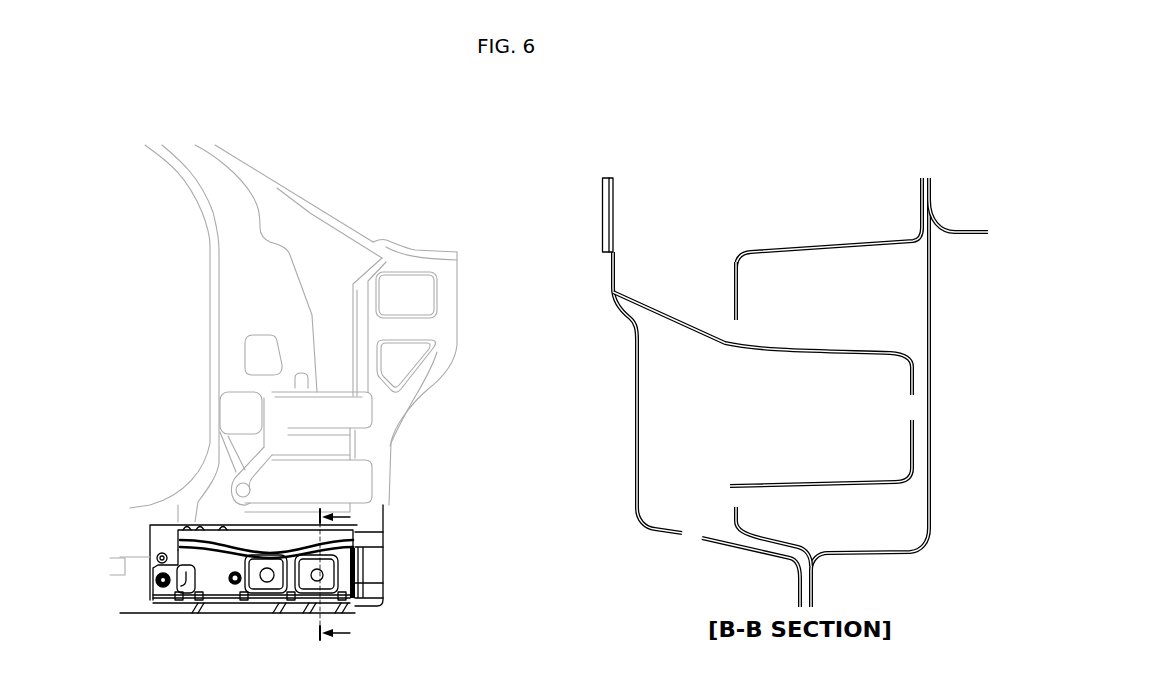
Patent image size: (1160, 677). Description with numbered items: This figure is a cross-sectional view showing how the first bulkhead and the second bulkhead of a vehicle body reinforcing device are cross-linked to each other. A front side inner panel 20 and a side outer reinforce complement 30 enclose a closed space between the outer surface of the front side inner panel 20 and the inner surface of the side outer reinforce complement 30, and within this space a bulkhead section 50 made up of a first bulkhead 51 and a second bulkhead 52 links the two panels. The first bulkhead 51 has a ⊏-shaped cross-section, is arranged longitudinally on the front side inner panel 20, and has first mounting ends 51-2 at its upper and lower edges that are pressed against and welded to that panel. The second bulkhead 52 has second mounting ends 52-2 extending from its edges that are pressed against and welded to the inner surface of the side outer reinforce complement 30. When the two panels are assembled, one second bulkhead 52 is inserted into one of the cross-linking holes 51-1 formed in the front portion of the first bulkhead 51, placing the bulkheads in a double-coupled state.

The front side inner panel 20 is at (938, 294).
The side outer reinforce complement 30 is at (392, 550).
The bulkhead section 50 is at (815, 141).
The first bulkhead 51 is at (797, 344).
The cross-linking hole 51-1 is at (731, 322).
The first mounting end 51-2 is at (920, 210).
The second bulkhead 52 is at (758, 317).
The second mounting end 52-2 is at (617, 265).